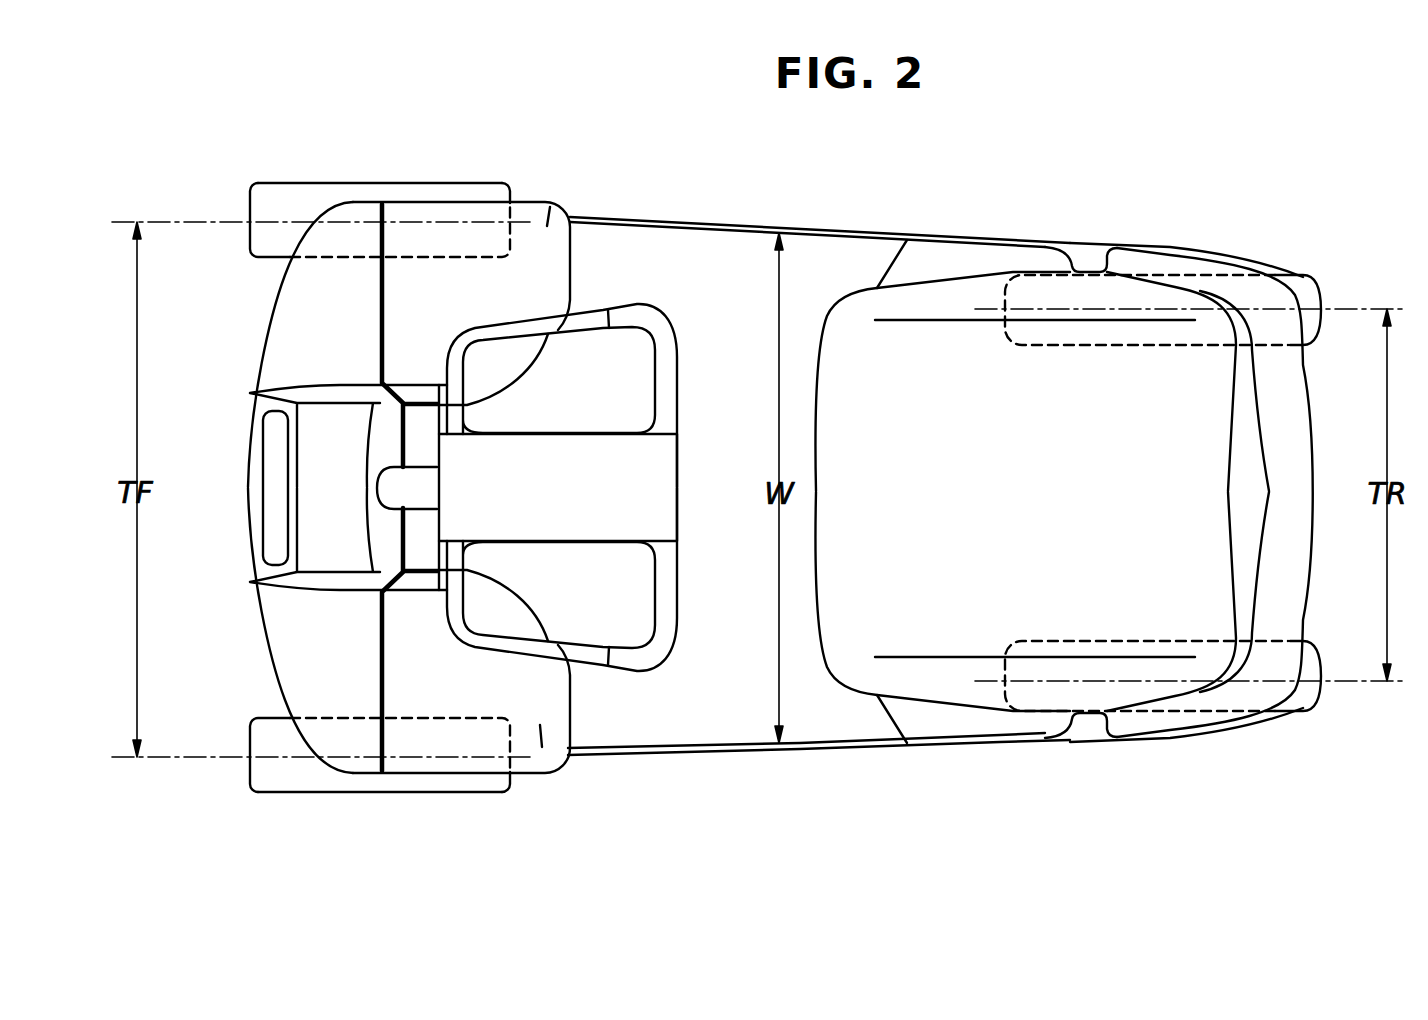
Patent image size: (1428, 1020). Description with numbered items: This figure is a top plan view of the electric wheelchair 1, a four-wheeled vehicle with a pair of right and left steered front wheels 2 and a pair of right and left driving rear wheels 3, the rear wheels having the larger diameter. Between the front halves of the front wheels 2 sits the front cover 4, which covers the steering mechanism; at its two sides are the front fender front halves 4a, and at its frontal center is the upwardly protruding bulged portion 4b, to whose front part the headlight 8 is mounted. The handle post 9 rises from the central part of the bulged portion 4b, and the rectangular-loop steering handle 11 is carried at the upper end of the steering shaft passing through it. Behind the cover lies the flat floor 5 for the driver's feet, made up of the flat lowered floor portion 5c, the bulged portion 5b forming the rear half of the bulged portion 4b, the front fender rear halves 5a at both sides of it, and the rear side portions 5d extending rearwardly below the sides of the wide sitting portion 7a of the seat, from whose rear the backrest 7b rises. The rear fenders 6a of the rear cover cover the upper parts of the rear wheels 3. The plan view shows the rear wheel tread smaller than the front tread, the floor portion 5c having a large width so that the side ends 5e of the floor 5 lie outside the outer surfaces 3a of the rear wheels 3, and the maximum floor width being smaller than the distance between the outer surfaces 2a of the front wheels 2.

The electric wheelchair 1 is at (968, 165).
The front wheel 2 is at (268, 185).
The outer surface of front wheel 2a is at (410, 185).
The rear wheel 3 is at (1307, 290).
The outer surface of rear wheel 3a is at (1197, 275).
The front cover 4 is at (296, 361).
The front fender front half 4a is at (340, 280).
The bulged portion 4b is at (320, 530).
The flat floor 5 is at (671, 688).
The front fender rear half 5a is at (548, 225).
The bulged portion 5b is at (423, 423).
The floor portion 5c is at (738, 556).
The rear side portion 5d is at (1085, 255).
The side end of floor 5e is at (770, 225).
The rear fender 6a is at (1290, 273).
The sitting portion 7a is at (945, 596).
The backrest 7b is at (1292, 540).
The headlight 8 is at (272, 470).
The handle post 9 is at (420, 487).
The steering handle 11 is at (665, 320).